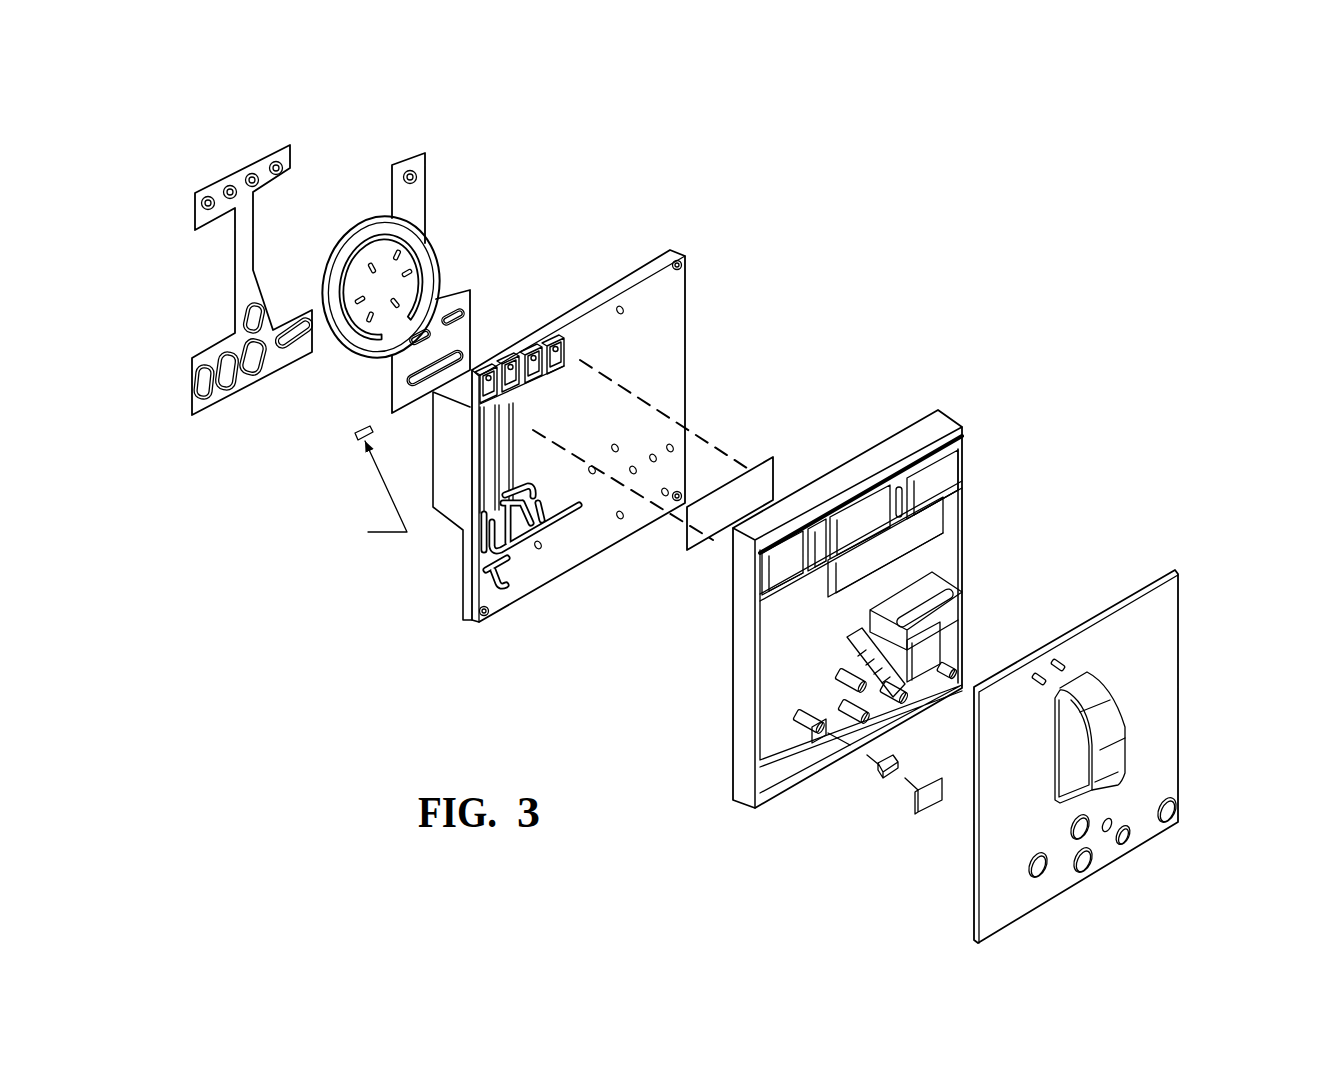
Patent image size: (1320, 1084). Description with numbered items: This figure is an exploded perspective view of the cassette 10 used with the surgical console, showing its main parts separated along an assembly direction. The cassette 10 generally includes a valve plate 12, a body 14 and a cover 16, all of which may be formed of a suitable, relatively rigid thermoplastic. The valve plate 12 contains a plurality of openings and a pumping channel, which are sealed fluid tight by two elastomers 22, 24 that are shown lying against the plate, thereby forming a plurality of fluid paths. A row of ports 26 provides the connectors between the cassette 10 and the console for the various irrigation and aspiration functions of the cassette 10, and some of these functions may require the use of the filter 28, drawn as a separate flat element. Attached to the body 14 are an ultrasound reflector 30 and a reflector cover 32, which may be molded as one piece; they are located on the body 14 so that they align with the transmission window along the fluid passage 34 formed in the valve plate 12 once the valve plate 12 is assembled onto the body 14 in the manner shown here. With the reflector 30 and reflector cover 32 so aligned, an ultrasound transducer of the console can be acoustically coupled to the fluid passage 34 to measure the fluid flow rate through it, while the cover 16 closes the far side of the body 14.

The cassette 10 is at (437, 695).
The valve plate 12 is at (655, 315).
The body 14 is at (743, 707).
The cover 16 is at (1156, 604).
The elastomer 22 is at (257, 223).
The elastomer 24 is at (438, 277).
The ports 26 is at (560, 338).
The filter 28 is at (681, 553).
The ultrasound reflector 30 is at (877, 781).
The reflector cover 32 is at (921, 815).
The fluid passage 34 is at (558, 553).